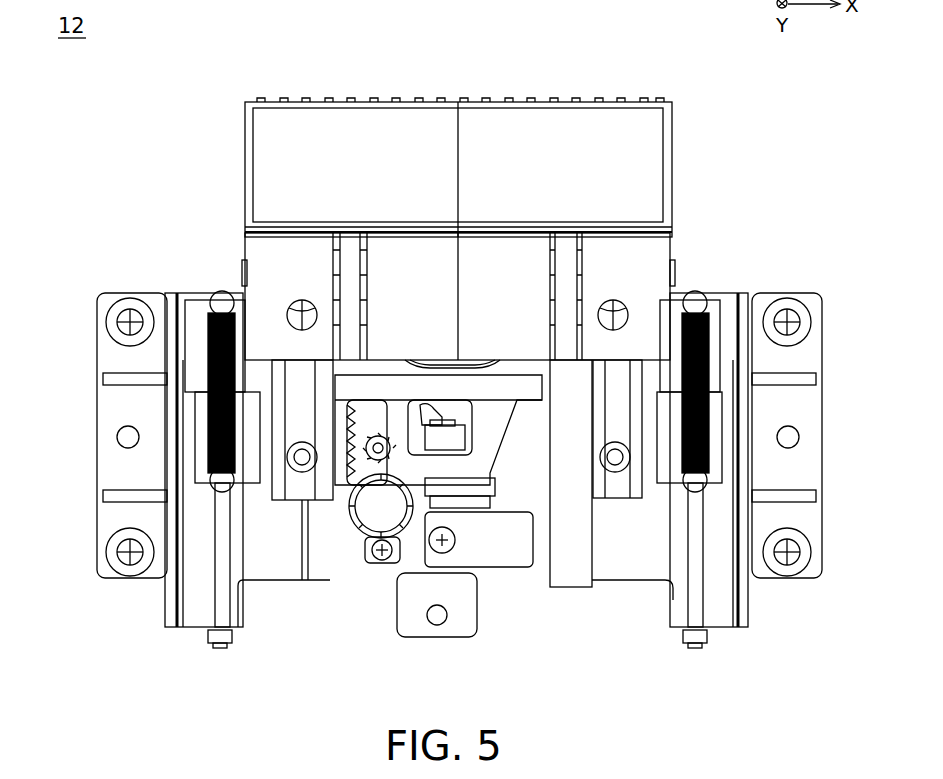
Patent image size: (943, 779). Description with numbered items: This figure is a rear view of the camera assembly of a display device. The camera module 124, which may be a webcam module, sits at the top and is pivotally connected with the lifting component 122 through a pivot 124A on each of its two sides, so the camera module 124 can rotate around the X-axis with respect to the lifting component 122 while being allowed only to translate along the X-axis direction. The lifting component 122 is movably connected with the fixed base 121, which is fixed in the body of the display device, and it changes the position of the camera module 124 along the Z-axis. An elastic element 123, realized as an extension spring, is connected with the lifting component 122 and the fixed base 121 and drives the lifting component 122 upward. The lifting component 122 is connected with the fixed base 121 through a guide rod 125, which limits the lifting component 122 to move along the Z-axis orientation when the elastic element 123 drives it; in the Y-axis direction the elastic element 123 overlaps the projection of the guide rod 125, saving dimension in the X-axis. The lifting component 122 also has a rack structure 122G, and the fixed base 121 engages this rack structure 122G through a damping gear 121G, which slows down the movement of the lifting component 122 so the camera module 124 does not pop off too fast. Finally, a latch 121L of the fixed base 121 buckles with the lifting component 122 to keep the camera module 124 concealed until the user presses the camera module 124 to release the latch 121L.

The fixed base 121 is at (100, 298).
The damping gear 121G is at (368, 535).
The latch 121L is at (425, 415).
The lifting component 122 is at (262, 490).
The rack structure 122G is at (345, 505).
The elastic element 123 is at (215, 395).
The camera module 124 is at (245, 134).
The pivot 124A is at (243, 273).
The guide rod 125 is at (218, 598).